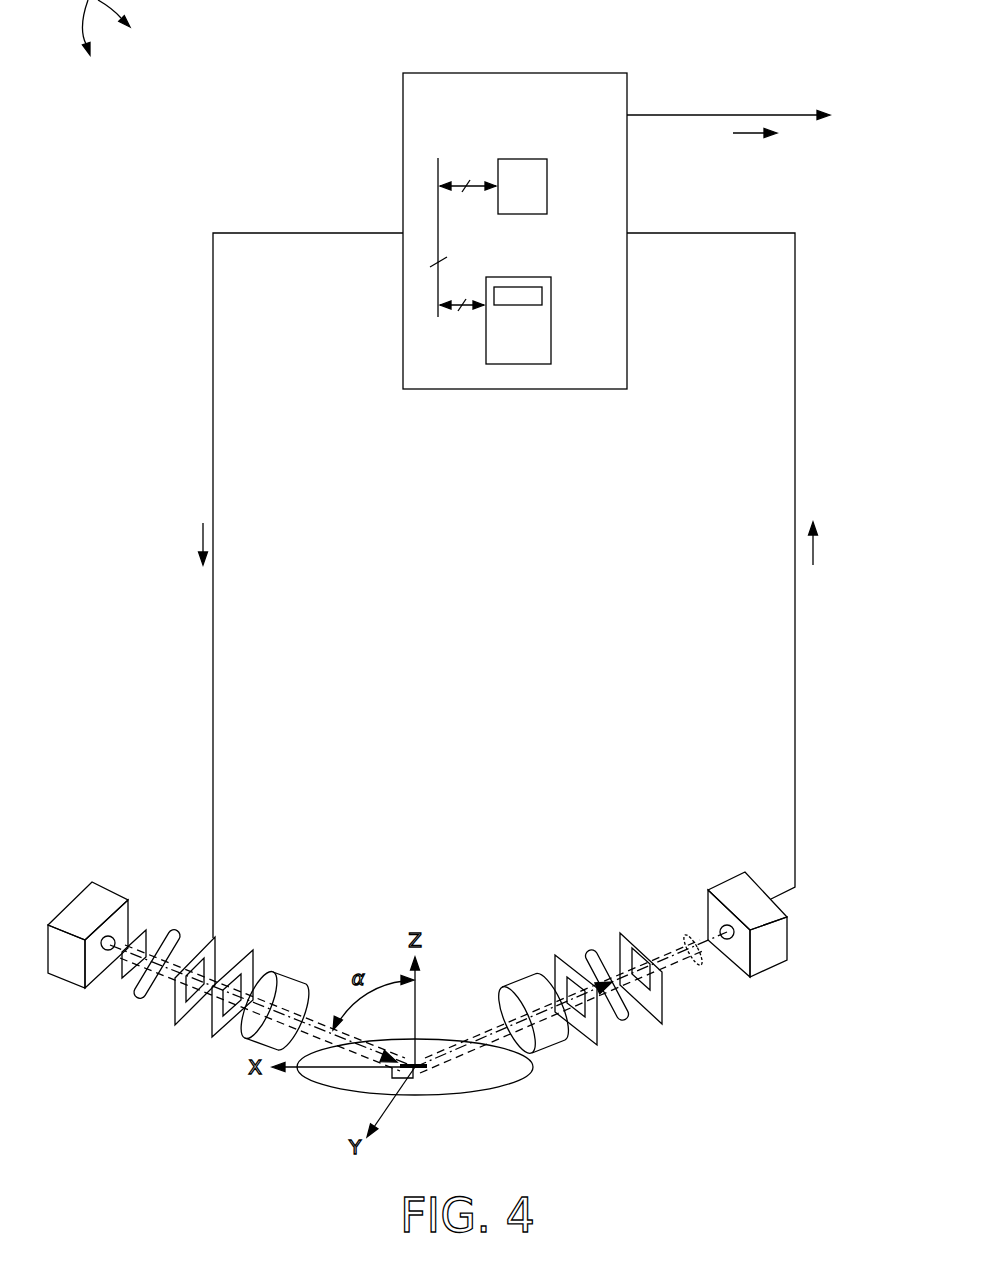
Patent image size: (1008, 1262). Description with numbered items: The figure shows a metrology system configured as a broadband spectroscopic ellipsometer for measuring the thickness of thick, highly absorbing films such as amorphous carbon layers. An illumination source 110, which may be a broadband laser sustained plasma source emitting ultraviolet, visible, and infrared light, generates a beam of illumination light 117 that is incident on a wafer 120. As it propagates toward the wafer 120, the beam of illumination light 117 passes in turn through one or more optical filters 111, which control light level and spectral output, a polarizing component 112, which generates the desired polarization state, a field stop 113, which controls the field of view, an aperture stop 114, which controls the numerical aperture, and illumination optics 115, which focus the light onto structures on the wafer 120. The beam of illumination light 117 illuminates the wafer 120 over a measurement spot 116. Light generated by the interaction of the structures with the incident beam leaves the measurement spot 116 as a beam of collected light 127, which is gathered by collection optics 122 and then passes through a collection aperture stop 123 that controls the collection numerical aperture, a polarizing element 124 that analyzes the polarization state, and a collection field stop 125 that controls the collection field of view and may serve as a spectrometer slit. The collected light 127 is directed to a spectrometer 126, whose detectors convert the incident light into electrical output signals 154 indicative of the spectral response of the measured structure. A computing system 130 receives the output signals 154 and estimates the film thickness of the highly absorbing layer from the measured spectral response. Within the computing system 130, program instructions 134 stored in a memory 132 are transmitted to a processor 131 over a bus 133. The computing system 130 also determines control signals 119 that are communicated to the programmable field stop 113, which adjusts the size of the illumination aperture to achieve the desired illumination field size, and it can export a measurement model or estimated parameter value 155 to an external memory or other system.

The illumination source 110 is at (110, 890).
The optical filters 111 is at (147, 930).
The polarizing component 112 is at (177, 937).
The field stop 113 is at (215, 953).
The aperture stop 114 is at (255, 968).
The illumination optics 115 is at (287, 975).
The measurement spot 116 is at (413, 1082).
The illumination light 117 is at (140, 967).
The control signals 119 is at (200, 543).
The wafer 120 is at (473, 1095).
The collection optics 122 is at (512, 982).
The collection aperture stop 123 is at (555, 972).
The polarizing element 124 is at (590, 952).
The collection field stop 125 is at (618, 947).
The spectrometer 126 is at (725, 882).
The collected light 127 is at (702, 967).
The computing system 130 is at (502, 103).
The processor 131 is at (547, 186).
The memory 132 is at (486, 352).
The bus 133 is at (438, 233).
The program instructions 134 is at (542, 296).
The output signals 154 is at (815, 545).
The estimated parameter value 155 is at (755, 134).